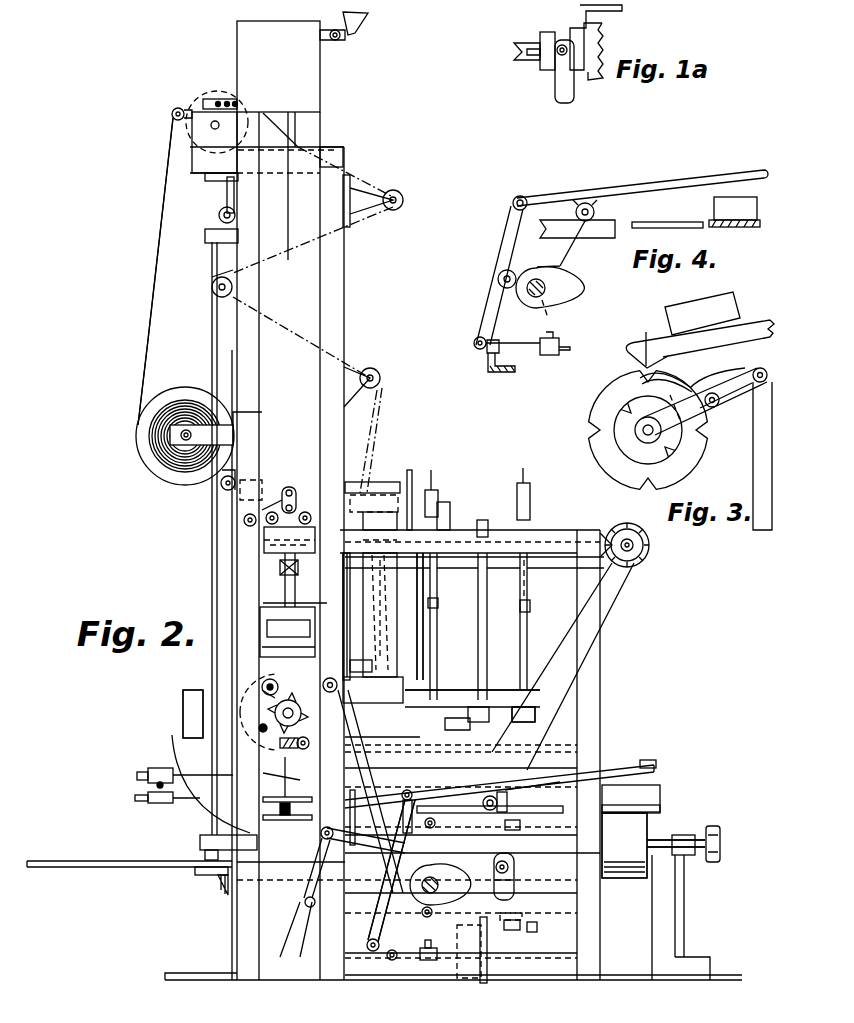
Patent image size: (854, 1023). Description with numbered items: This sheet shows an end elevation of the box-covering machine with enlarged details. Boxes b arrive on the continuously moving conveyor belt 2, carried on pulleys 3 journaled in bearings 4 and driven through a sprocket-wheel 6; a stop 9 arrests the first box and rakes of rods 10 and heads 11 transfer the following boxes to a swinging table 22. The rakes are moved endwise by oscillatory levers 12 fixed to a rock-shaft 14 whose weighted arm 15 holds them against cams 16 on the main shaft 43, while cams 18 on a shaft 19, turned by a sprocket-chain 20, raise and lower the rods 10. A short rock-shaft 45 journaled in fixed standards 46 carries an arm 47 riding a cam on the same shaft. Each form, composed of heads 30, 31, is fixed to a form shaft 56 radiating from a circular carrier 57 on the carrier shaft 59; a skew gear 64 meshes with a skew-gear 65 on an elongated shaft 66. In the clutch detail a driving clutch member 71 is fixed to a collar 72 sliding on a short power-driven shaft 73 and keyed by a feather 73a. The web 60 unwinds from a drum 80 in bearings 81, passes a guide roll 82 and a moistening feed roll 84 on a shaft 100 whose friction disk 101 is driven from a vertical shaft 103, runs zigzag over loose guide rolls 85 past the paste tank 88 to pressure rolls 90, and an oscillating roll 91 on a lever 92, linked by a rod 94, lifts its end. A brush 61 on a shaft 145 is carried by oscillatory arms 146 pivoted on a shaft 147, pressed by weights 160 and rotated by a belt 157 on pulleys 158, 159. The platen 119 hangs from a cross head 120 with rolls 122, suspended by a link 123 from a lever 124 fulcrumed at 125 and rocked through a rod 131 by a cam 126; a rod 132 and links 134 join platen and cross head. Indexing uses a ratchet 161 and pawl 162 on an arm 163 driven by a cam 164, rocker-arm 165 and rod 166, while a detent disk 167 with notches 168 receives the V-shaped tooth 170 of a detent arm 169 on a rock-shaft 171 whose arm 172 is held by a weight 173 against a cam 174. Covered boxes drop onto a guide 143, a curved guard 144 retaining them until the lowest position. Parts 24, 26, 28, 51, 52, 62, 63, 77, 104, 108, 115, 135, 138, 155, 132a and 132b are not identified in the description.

In FIG. 1A, the driving clutch member 71 is at (580, 12).
In FIG. 1A, the collar 72 is at (541, 38).
In FIG. 1A, the short power driven shaft 73 is at (514, 56).
In FIG. 1A, the feather 73a is at (530, 57).
In FIG. 1A, the pin 77 is at (560, 88).
In FIG. 4, the rod 10 is at (700, 174).
In FIG. 2, the rod 10 is at (619, 765).
In FIG. 2, the head 11 is at (654, 764).
In FIG. 4, the oscillatory lever 12 is at (504, 237).
In FIG. 2, the oscillatory lever 12 is at (387, 923).
In FIG. 4, the rock-shaft 14 is at (478, 349).
In FIG. 2, the rock-shaft 14 is at (371, 952).
In FIG. 4, the weighted arm 15 is at (534, 357).
In FIG. 2, the weighted arm 15 is at (418, 962).
In FIG. 4, the cam 16 is at (577, 289).
In FIG. 4, the cam 18 is at (595, 205).
In FIG. 2, the cam 18 is at (489, 796).
In FIG. 4, the shaft 19 is at (586, 222).
In FIG. 2, the shaft 19 is at (432, 817).
In FIG. 4, the main shaft 43 is at (538, 300).
In FIG. 2, the main shaft 43 is at (420, 895).
In FIG. 4, the box b is at (757, 205).
In FIG. 2, the box b is at (260, 613).
In FIG. 4, the conveyor belt 2 is at (760, 223).
In FIG. 2, the conveyor belt 2 is at (648, 818).
In FIG. 2, the pulley 3 is at (648, 834).
In FIG. 2, the bearing 4 is at (688, 856).
In FIG. 2, the sprocket-wheel 6 is at (721, 836).
In FIG. 2, the stop 9 is at (626, 810).
In FIG. 3, the weight 173 is at (698, 305).
In FIG. 2, the weight 173 is at (355, 616).
In FIG. 3, the detent arm 169 is at (752, 317).
In FIG. 2, the detent arm 169 is at (372, 665).
In FIG. 3, the V-shaped tooth 170 is at (646, 336).
In FIG. 3, the notch 168 is at (637, 375).
In FIG. 3, the pawl 162 is at (640, 392).
In FIG. 3, the ratchet 161 is at (623, 413).
In FIG. 2, the ratchet 161 is at (331, 678).
In FIG. 3, the carrier shaft 59 is at (644, 432).
In FIG. 3, the disk 167 is at (614, 472).
In FIG. 3, the arm 163 is at (730, 395).
In FIG. 3, the rod 166 is at (768, 450).
In FIG. 2, the rod 166 is at (323, 823).
In FIG. 2, the disk 101 is at (197, 105).
In FIG. 2, the moistening feed roll 84 is at (209, 100).
In FIG. 2, the guide roll 82 is at (172, 111).
In FIG. 2, the shaft 100 is at (211, 125).
In FIG. 2, the block 104 is at (195, 145).
In FIG. 2, the vertical power driven shaft 103 is at (218, 210).
In FIG. 2, the lever 115 is at (234, 214).
In FIG. 2, the block 108 is at (207, 232).
In FIG. 2, the loose guide roll 85 is at (403, 197).
In FIG. 2, the web 60 is at (152, 293).
In FIG. 2, the core or drum 80 is at (186, 425).
In FIG. 2, the bearing 81 is at (178, 447).
In FIG. 2, the roll 122 is at (244, 519).
In FIG. 2, the fulcrum 125 is at (234, 480).
In FIG. 2, the lever 124 is at (276, 488).
In FIG. 2, the cross head 120 is at (292, 500).
In FIG. 2, the link 123 is at (288, 501).
In FIG. 2, the link 134 is at (262, 596).
In FIG. 2, the platen 119 is at (260, 610).
In FIG. 2, the block 138 is at (283, 622).
In FIG. 2, the bar 135 is at (262, 646).
In FIG. 2, the skew gear 64 is at (266, 679).
In FIG. 2, the circular carrier 57 is at (275, 710).
In FIG. 2, the skew-gear 65 is at (262, 690).
In FIG. 2, the form shaft 56 is at (200, 720).
In FIG. 2, the shaft 66 is at (259, 726).
In FIG. 2, the fixed curved guard 144 is at (172, 740).
In FIG. 2, the block 51 is at (537, 926).
In FIG. 2, the head 31 is at (283, 797).
In FIG. 2, the bar 63 is at (340, 780).
In FIG. 2, the head 30 is at (285, 820).
In FIG. 2, the guide 143 is at (155, 870).
In FIG. 2, the cam 174 is at (305, 902).
In FIG. 2, the fixed standard 46 is at (473, 948).
In FIG. 2, the arm 47 is at (430, 935).
In FIG. 2, the cam 126 is at (470, 928).
In FIG. 2, the short rock-shaft 45 is at (512, 914).
In FIG. 2, the sprocket-chain 20 is at (514, 887).
In FIG. 2, the cam 164 is at (512, 882).
In FIG. 2, the rocker-arm 165 is at (507, 866).
In FIG. 2, the piece 28 is at (520, 826).
In FIG. 2, the swinging table 22 is at (552, 808).
In FIG. 2, the shaft 26 is at (525, 787).
In FIG. 2, the block 52 is at (504, 792).
In FIG. 2, the rod 131 is at (400, 760).
In FIG. 2, the brush 61 is at (397, 731).
In FIG. 2, the rock-shaft 171 is at (458, 722).
In FIG. 2, the shaft 145 is at (478, 716).
In FIG. 2, the pulley 159 is at (520, 706).
In FIG. 2, the oscillatory arm 146 is at (440, 683).
In FIG. 2, the box 62 is at (403, 680).
In FIG. 2, the rod 94 is at (433, 612).
In FIG. 2, the belt 157 is at (488, 645).
In FIG. 2, the bracket 155 is at (530, 606).
In FIG. 2, the shaft 147 is at (528, 597).
In FIG. 2, the pulley 158 is at (483, 522).
In FIG. 2, the paste tank 88 is at (465, 508).
In FIG. 2, the weight 160 is at (436, 490).
In FIG. 2, the lever 92 is at (413, 510).
In FIG. 2, the pressure roll 90 is at (365, 492).
In FIG. 2, the rod 132 is at (379, 518).
In FIG. 2, the line 132a is at (368, 541).
In FIG. 2, the line 132b is at (389, 622).
In FIG. 2, the oscillating roll 91 is at (410, 616).
In FIG. 2, the pivot 24 is at (412, 795).
In FIG. 2, the arm 172 is at (356, 838).